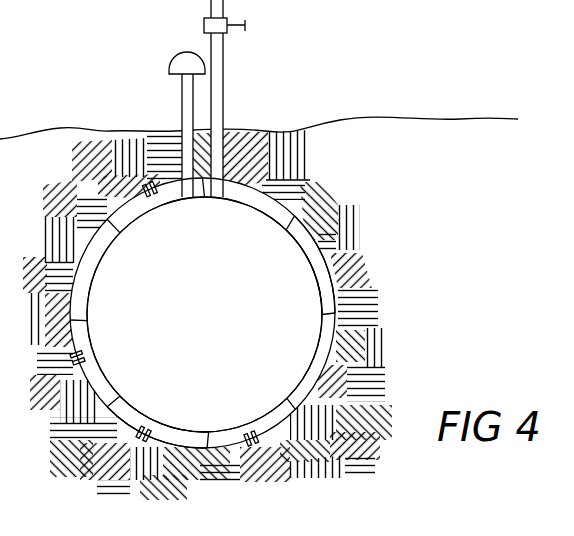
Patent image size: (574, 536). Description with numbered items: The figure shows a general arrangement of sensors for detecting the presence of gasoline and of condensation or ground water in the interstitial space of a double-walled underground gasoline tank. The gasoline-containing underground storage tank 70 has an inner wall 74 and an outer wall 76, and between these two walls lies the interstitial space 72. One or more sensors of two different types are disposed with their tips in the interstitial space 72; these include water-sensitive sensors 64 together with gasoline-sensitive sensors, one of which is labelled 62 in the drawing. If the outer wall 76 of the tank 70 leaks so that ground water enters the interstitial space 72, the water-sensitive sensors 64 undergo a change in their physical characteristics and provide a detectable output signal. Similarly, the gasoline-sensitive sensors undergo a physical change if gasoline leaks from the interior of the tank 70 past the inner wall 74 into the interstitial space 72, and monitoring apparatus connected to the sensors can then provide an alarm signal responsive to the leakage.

The tank shell segment 62 is at (159, 436).
The water-sensitive sensor 64 is at (142, 430).
The underground storage tank 70 is at (211, 357).
The interstitial space 72 is at (327, 290).
The inner wall 74 is at (90, 340).
The outer wall 76 is at (72, 290).